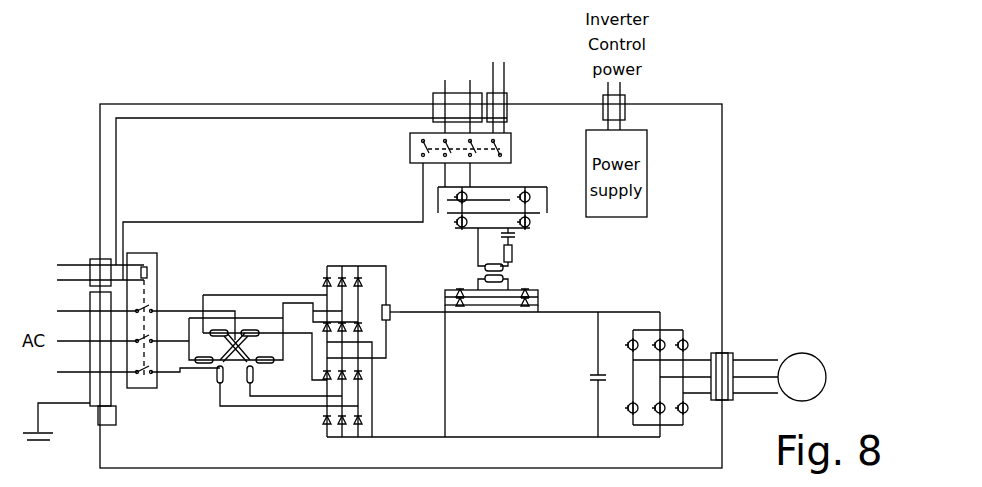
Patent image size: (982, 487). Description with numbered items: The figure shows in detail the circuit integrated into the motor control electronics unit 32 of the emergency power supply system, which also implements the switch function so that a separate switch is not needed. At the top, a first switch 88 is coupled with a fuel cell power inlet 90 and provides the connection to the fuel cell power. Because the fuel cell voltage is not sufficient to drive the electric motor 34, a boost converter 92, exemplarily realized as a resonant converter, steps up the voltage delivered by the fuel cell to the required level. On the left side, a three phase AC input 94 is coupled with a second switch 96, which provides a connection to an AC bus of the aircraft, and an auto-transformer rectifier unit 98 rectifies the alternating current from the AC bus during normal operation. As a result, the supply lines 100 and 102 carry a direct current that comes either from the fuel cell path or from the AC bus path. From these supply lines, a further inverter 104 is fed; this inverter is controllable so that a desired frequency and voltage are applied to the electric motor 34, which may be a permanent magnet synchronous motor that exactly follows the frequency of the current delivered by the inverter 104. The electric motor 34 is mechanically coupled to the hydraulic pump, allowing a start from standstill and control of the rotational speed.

The motor control electronics unit 32 is at (690, 60).
The electric motor 34 is at (803, 353).
The first switch 88 is at (519, 160).
The fuel cell power inlet 90 is at (456, 84).
The boost converter 92 is at (553, 256).
The three phase AC input 94 is at (86, 256).
The second switch 96 is at (153, 298).
The auto-transformer rectifier unit 98 is at (310, 278).
The supply line 100 is at (527, 312).
The supply line 102 is at (520, 437).
The inverter 104 is at (676, 314).